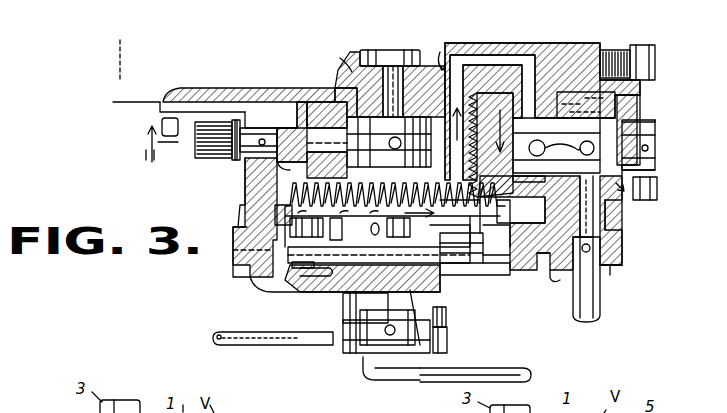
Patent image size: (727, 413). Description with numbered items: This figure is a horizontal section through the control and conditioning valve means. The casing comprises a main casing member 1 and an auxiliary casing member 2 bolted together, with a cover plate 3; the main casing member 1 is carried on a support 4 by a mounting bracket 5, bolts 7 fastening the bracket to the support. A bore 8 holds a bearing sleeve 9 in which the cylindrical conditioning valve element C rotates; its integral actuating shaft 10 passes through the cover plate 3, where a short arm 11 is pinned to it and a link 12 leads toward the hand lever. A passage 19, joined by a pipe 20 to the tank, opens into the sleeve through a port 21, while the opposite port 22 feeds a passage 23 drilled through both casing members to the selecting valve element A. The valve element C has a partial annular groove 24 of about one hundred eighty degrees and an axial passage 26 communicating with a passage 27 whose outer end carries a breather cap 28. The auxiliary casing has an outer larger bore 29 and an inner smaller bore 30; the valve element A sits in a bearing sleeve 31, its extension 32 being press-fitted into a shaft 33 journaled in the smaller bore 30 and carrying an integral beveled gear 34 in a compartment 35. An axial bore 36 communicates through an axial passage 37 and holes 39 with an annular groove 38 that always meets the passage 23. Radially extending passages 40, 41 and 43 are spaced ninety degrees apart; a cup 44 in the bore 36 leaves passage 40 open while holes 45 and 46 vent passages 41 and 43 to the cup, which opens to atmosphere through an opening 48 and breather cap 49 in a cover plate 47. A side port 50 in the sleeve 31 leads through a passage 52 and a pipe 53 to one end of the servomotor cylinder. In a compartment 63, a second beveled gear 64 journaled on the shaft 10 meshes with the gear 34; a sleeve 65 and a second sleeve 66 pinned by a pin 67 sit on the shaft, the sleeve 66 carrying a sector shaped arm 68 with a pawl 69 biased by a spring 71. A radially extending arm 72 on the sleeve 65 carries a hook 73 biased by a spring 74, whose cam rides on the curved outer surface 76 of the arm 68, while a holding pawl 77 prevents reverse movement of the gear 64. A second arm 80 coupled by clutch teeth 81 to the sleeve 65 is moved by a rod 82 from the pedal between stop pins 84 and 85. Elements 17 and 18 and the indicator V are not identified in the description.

The main casing member 1 is at (370, 100).
The auxiliary casing member 2 is at (612, 275).
The cover plate 3 is at (548, 270).
The support 4 is at (113, 80).
The mounting bracket 5 is at (225, 87).
The bolts 7 is at (185, 136).
The bore 8 is at (428, 66).
The bearing sleeve 9 is at (300, 102).
The actuating shaft 10 is at (350, 262).
The short arm 11 is at (365, 372).
The link 12 is at (508, 368).
The lower block 17 is at (343, 348).
The bolt 18 is at (447, 345).
The passage 19 is at (262, 110).
The pipe 20 is at (222, 158).
The port 21 is at (283, 126).
The second port 22 is at (458, 55).
The passage 23 is at (520, 118).
The partial annular groove 24 is at (334, 100).
The axial passage 26 is at (340, 68).
The passage 27 is at (396, 66).
The breather cap 28 is at (380, 50).
The outer larger bore 29 is at (655, 62).
The inner smaller bore 30 is at (610, 78).
The bearing sleeve 31 is at (640, 90).
The extension 32 is at (510, 205).
The shaft 33 is at (560, 60).
The beveled gear 34 is at (540, 118).
The compartment 35 is at (490, 93).
The axial bore 36 is at (535, 212).
The axial passage 37 is at (655, 126).
The annular groove 38 is at (592, 80).
The holes 39 is at (518, 182).
The radially extending passage 40 is at (655, 142).
The radially extending passage 41 is at (622, 225).
The radially extending passage 43 is at (637, 105).
The cup 44 is at (655, 170).
The hole 45 is at (637, 115).
The hole 46 is at (622, 210).
The cover plate 47 is at (632, 52).
The opening 48 is at (657, 188).
The breather cap 49 is at (650, 150).
The side port 50 is at (622, 240).
The passage 52 is at (622, 262).
The pipe 53 is at (600, 310).
The compartment 63 is at (275, 214).
The second beveled gear 64 is at (285, 204).
The sleeve 65 is at (462, 264).
The second sleeve 66 is at (412, 225).
The pin 67 is at (380, 230).
The sector shaped arm 68 is at (490, 264).
The pawl 69 is at (488, 266).
The spring 71 is at (460, 264).
The radially extending arm 72 is at (300, 268).
The hook 73 is at (296, 272).
The spring 74 is at (298, 270).
The curved outer surface 76 is at (356, 250).
The holding pawl 77 is at (233, 237).
The second arm 80 is at (365, 342).
The clutch teeth 81 is at (420, 345).
The rod 82 is at (225, 345).
The stop pin 84 is at (343, 315).
The stop pin 85 is at (446, 322).
The selecting control valve element A is at (640, 200).
The conditioning valve element C is at (340, 58).
The section V is at (439, 49).